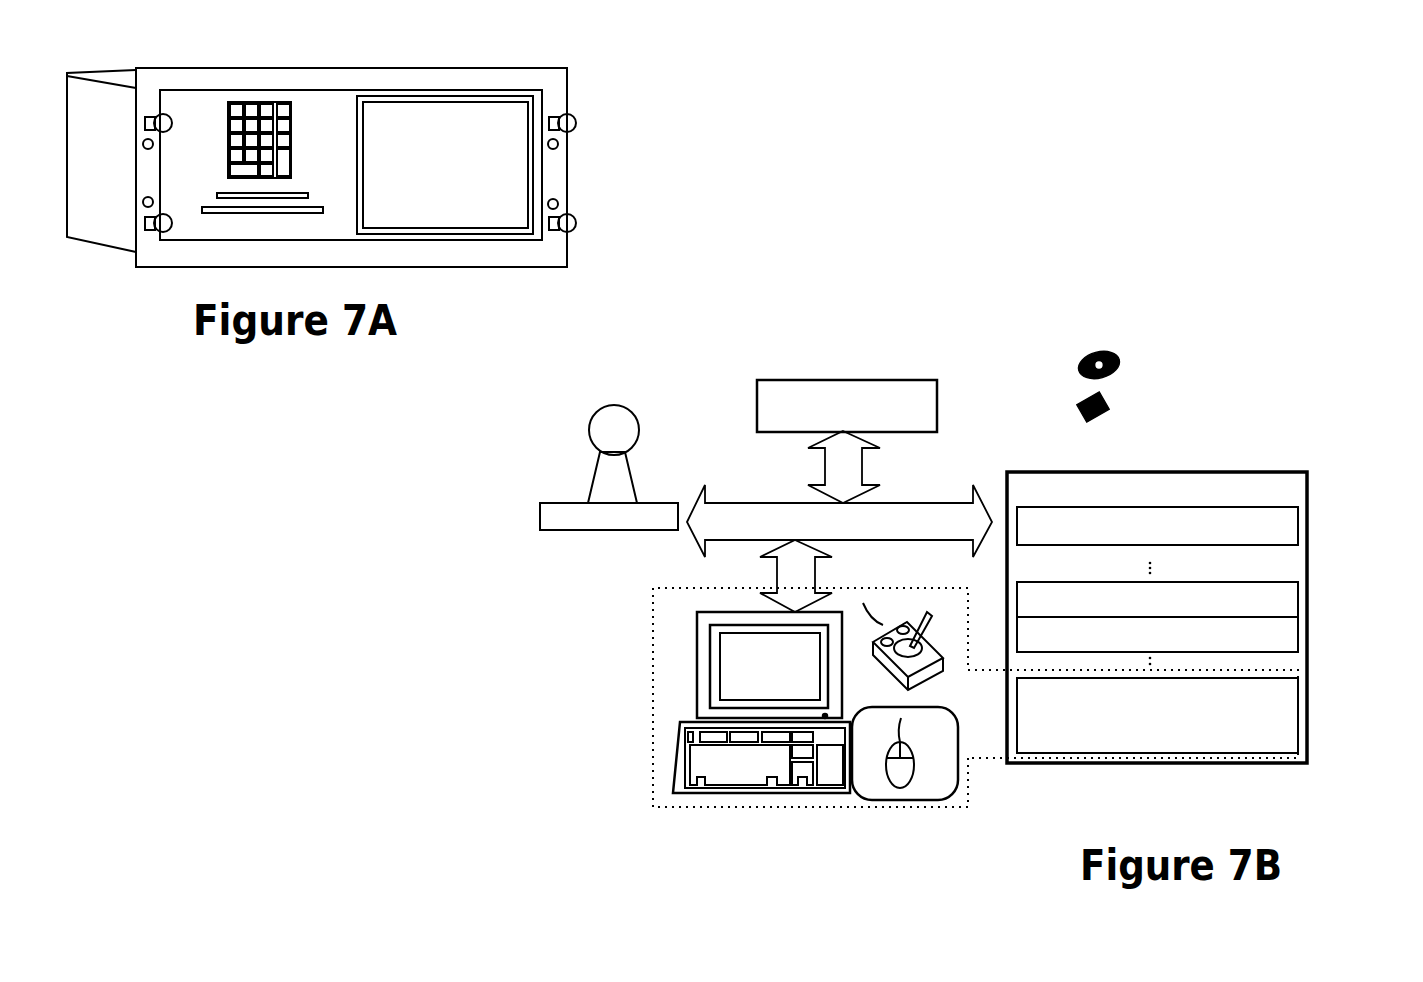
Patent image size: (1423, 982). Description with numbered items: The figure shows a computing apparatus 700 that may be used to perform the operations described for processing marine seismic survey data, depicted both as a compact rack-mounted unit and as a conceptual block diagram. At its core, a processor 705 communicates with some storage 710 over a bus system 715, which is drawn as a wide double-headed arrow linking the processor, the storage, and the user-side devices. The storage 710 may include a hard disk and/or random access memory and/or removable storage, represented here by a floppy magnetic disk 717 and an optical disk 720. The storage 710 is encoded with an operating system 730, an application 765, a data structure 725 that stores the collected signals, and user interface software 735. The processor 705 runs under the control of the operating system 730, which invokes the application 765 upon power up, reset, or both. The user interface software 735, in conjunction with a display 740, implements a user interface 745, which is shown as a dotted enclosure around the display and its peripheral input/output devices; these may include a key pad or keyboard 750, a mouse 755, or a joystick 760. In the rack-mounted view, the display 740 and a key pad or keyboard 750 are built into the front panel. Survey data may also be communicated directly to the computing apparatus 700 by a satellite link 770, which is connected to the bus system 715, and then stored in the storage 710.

In FIG. 7A, the computing apparatus 700 is at (640, 114).
In FIG. 7B, the computing apparatus 700 is at (1236, 262).
In FIG. 7B, the processor 705 is at (757, 381).
In FIG. 7B, the storage 710 is at (1308, 470).
In FIG. 7B, the bus system 715 is at (763, 503).
In FIG. 7B, the floppy magnetic disk 717 is at (1113, 405).
In FIG. 7B, the optical disk 720 is at (1118, 355).
In FIG. 7B, the data structure 725 is at (1298, 630).
In FIG. 7B, the operating system 730 is at (1300, 528).
In FIG. 7B, the user interface software 735 is at (1300, 713).
In FIG. 7A, the display 740 is at (492, 103).
In FIG. 7B, the display 740 is at (697, 623).
In FIG. 7B, the user interface 745 is at (653, 807).
In FIG. 7A, the key pad or keyboard 750 is at (287, 102).
In FIG. 7B, the key pad or keyboard 750 is at (675, 757).
In FIG. 7B, the mouse 755 is at (902, 790).
In FIG. 7B, the joystick 760 is at (892, 622).
In FIG. 7B, the application 765 is at (1298, 602).
In FIG. 7B, the satellite link 770 is at (540, 520).